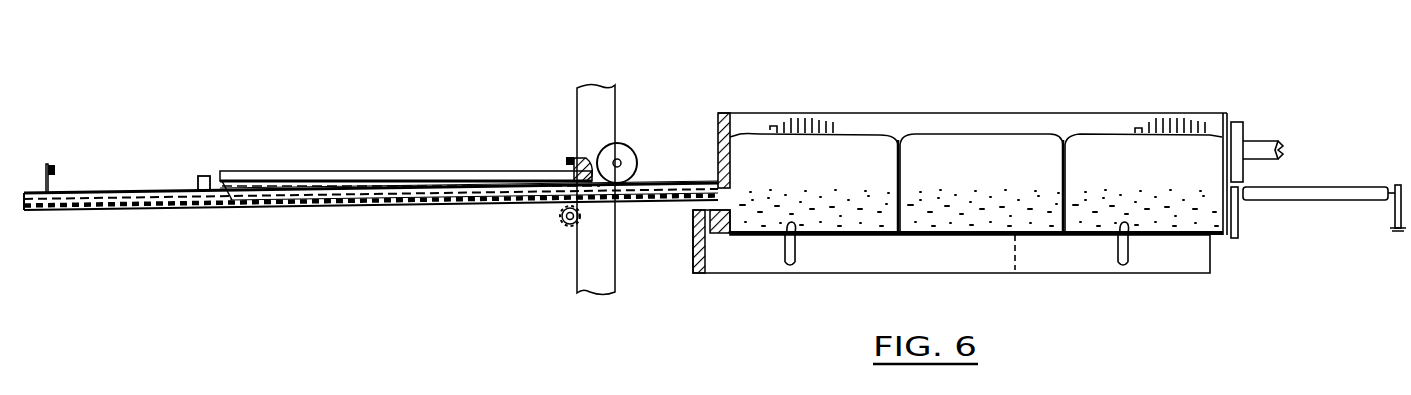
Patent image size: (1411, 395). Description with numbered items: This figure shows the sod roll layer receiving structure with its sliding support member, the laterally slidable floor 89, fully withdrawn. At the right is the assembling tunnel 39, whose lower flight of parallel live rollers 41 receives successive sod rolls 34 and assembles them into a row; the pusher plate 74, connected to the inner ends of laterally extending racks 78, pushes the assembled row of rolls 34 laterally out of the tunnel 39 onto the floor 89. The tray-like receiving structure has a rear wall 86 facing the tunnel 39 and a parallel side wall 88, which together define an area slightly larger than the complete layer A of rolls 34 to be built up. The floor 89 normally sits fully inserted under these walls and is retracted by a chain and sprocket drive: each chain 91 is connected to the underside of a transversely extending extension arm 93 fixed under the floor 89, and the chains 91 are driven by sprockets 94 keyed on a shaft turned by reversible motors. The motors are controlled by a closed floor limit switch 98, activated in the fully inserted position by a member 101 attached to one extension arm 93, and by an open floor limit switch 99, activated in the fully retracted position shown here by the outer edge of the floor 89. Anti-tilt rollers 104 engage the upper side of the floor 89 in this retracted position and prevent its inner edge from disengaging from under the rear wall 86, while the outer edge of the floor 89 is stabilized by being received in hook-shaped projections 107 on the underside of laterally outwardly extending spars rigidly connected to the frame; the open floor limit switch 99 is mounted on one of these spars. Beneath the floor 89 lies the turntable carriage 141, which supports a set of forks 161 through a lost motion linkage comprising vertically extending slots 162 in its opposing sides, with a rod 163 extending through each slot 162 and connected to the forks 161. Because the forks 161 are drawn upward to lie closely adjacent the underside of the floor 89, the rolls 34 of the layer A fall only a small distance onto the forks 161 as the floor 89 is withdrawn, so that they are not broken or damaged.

The sod rolls 34 is at (868, 137).
The assembling tunnel 39 is at (1362, 135).
The lower rollers 41 is at (1352, 187).
The pusher plate 74 is at (1243, 126).
The racks 78 is at (1283, 150).
The rear wall 86 is at (722, 112).
The side wall 88 is at (804, 117).
The sliding floor 89 is at (318, 203).
The chains 91 is at (425, 203).
The extension arm 93 is at (108, 191).
The sprockets 94 is at (562, 222).
The closed floor limit switch 98 is at (576, 158).
The open floor limit switch 99 is at (205, 175).
The member 101 is at (47, 162).
The anti-tilt rollers 104 is at (622, 156).
The hook-shaped projections 107 is at (318, 170).
The turntable carriage 141 is at (740, 262).
The forks 161 is at (1017, 272).
The slots 162 is at (793, 250).
The rods 163 is at (808, 240).
The complete layer A is at (1058, 119).